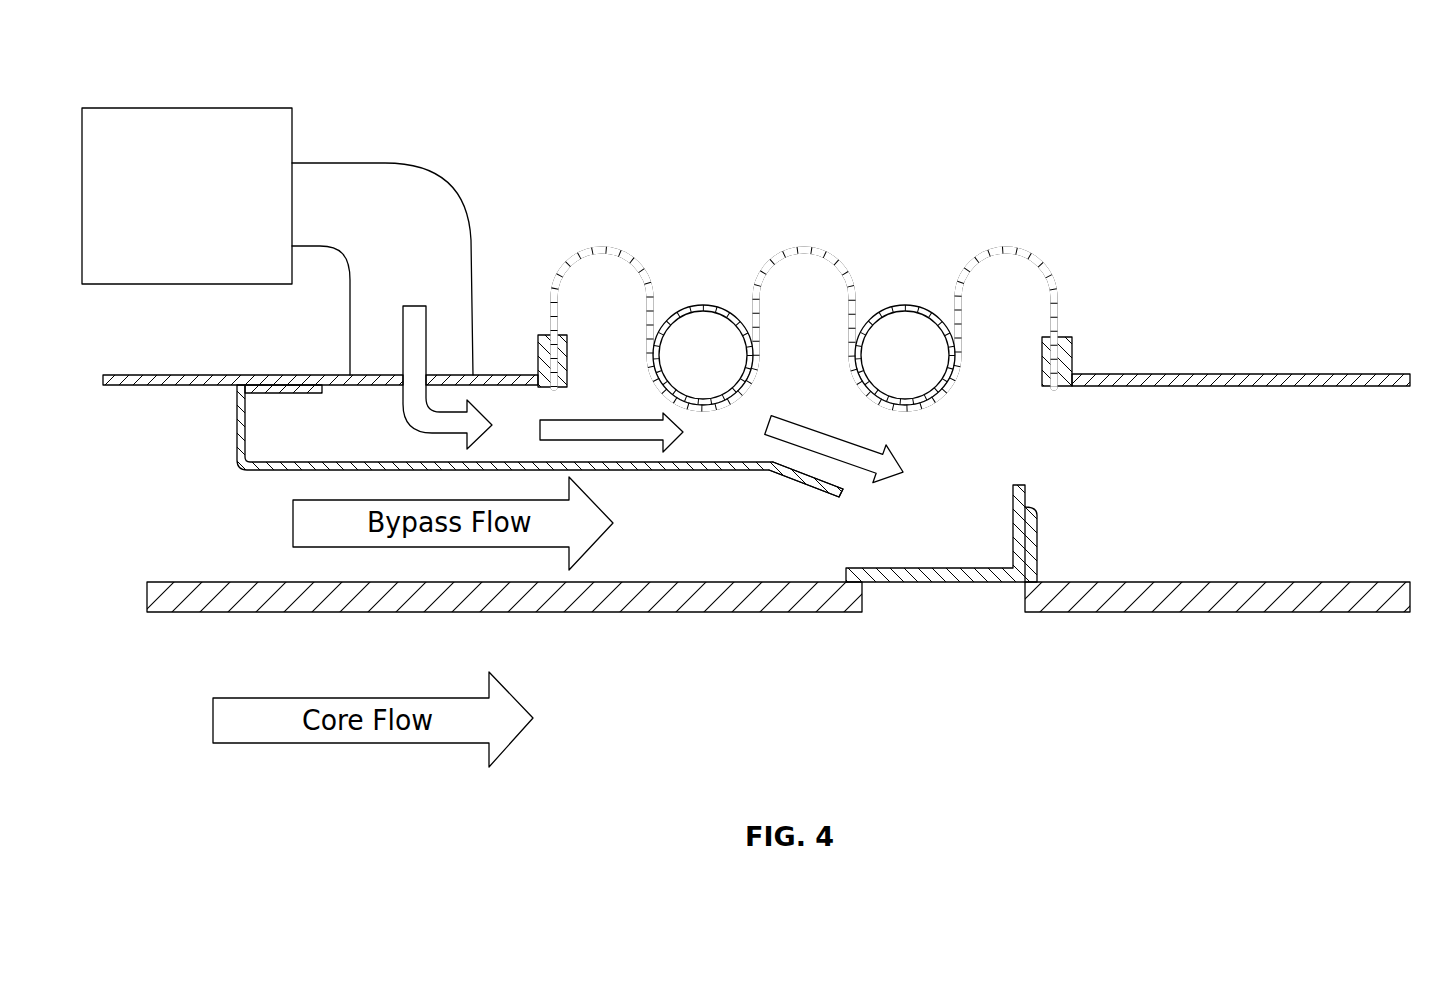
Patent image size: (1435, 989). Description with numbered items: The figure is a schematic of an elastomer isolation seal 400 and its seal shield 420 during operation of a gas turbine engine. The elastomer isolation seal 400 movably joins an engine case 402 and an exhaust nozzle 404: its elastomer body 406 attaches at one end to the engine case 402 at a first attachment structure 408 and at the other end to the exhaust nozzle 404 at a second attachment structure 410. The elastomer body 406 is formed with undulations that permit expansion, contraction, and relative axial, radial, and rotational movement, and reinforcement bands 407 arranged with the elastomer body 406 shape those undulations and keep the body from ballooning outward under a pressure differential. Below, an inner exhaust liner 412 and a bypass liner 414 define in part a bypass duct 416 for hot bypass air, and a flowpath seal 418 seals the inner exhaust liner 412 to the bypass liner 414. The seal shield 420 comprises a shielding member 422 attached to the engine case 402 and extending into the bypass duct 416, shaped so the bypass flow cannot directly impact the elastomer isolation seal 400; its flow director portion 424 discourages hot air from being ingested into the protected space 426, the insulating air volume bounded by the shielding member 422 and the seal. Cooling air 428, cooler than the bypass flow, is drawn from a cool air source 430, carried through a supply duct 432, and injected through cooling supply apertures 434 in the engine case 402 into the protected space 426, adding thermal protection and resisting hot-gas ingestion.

The elastomer isolation seal 400 is at (1036, 213).
The engine case 402 is at (519, 373).
The exhaust nozzle 404 is at (1246, 372).
The elastomer body 406 is at (810, 249).
The reinforcement bands 407 is at (704, 305).
The first attachment structure 408 is at (537, 331).
The second attachment structure 410 is at (1082, 330).
The inner exhaust liner 412 is at (1173, 580).
The bypass liner 414 is at (205, 581).
The bypass duct 416 is at (1177, 465).
The flowpath seal 418 is at (921, 567).
The seal shield 420 is at (208, 487).
The shielding member 422 is at (237, 425).
The flow director portion 424 is at (808, 490).
The protected space 426 is at (738, 450).
The cooling air 428 is at (423, 418).
The cool air source 430 is at (196, 106).
The supply duct 432 is at (457, 192).
The cooling supply apertures 434 is at (391, 367).